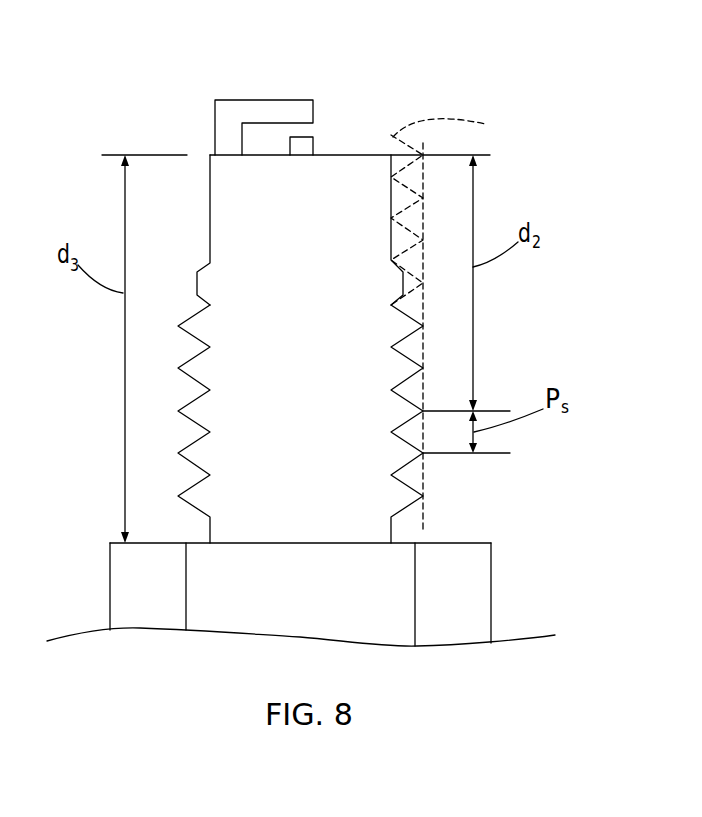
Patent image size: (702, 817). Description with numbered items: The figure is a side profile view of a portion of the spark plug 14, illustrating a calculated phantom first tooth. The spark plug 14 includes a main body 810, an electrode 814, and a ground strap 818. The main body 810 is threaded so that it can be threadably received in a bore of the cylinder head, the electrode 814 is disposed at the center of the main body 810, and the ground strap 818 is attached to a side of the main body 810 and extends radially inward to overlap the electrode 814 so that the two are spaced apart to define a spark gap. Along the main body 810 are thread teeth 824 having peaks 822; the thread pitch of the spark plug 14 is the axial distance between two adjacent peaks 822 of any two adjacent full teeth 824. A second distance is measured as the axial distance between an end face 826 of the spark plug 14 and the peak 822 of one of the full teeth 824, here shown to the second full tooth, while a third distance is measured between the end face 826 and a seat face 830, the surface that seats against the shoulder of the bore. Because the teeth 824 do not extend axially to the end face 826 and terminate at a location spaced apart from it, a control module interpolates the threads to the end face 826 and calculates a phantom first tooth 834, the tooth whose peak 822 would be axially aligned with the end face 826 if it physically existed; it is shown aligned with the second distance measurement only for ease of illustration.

The spark plug 14 is at (168, 64).
The main body 810 is at (224, 238).
The electrode 814 is at (313, 155).
The ground strap 818 is at (247, 100).
The peaks 822 is at (180, 409).
The thread teeth 824 is at (200, 452).
The end face 826 is at (366, 155).
The seat face 830 is at (468, 543).
The phantom first tooth 834 is at (460, 123).